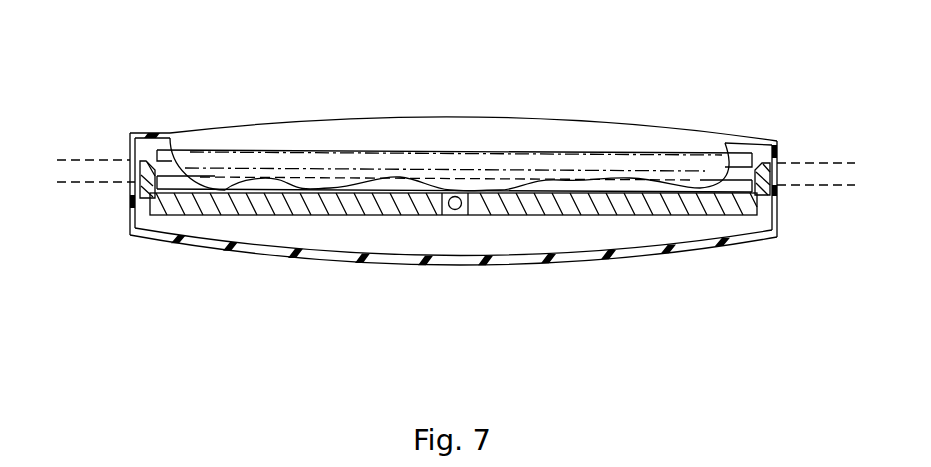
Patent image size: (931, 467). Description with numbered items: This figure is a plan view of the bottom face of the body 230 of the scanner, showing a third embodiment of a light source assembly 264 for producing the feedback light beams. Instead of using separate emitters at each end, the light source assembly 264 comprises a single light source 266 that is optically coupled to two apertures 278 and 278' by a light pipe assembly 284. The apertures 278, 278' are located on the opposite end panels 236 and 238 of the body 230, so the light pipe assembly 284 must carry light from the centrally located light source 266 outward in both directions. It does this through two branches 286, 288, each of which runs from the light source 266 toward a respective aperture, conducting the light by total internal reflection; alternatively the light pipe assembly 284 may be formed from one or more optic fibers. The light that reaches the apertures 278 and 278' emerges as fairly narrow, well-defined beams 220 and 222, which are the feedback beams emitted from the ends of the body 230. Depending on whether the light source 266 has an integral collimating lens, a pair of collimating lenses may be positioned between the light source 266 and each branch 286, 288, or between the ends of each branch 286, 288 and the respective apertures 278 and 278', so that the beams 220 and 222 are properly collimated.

The feedback light beam 220 is at (800, 187).
The feedback light beam 222 is at (140, 181).
The body 230 is at (511, 114).
The end panel 236 is at (778, 237).
The end panel 238 is at (130, 232).
The light source assembly 264 is at (289, 92).
The light source 266 is at (455, 214).
The aperture 278 is at (781, 154).
The aperture 278' is at (403, 145).
The light pipe assembly 284 is at (219, 213).
The branch of light pipe assembly 286 is at (480, 216).
The branch of light pipe assembly 288 is at (431, 216).